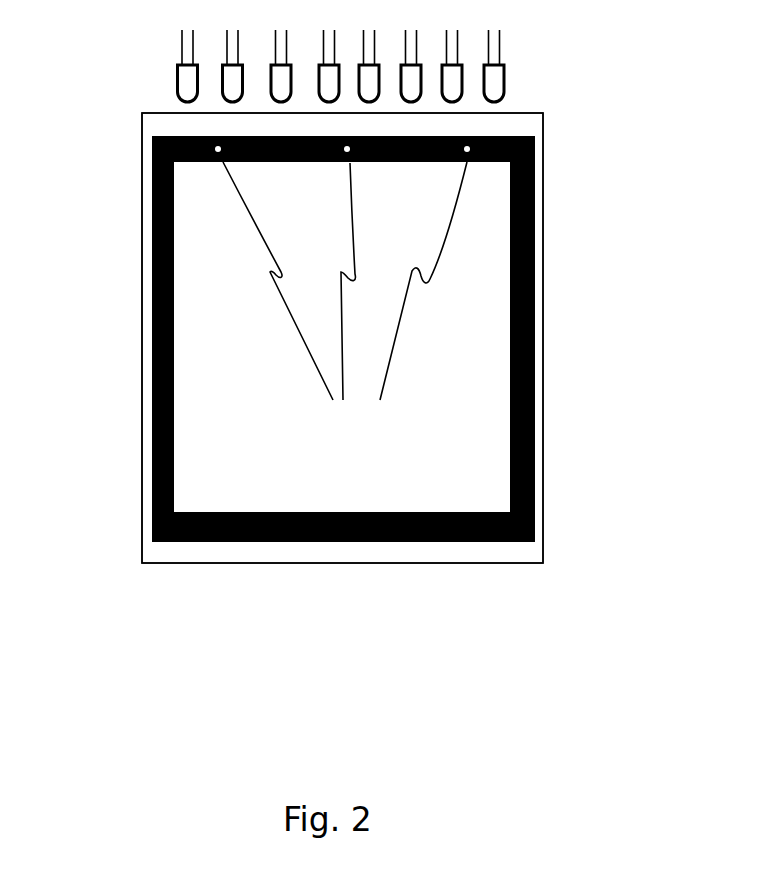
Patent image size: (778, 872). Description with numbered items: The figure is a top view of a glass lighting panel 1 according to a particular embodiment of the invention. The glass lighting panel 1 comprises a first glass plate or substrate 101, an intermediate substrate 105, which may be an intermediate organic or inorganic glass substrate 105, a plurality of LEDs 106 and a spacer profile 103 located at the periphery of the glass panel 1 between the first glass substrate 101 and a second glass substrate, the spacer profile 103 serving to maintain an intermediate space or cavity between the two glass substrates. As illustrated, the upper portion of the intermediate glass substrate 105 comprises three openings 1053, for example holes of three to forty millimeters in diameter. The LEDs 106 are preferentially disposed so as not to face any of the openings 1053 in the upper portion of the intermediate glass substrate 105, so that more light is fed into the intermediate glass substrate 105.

The glass lighting panel 1 is at (558, 118).
The first glass substrate 101 is at (543, 441).
The spacer profile 103 is at (152, 263).
The intermediate substrate 105 is at (233, 403).
The openings 1053 is at (345, 298).
The LEDs 106 is at (177, 73).